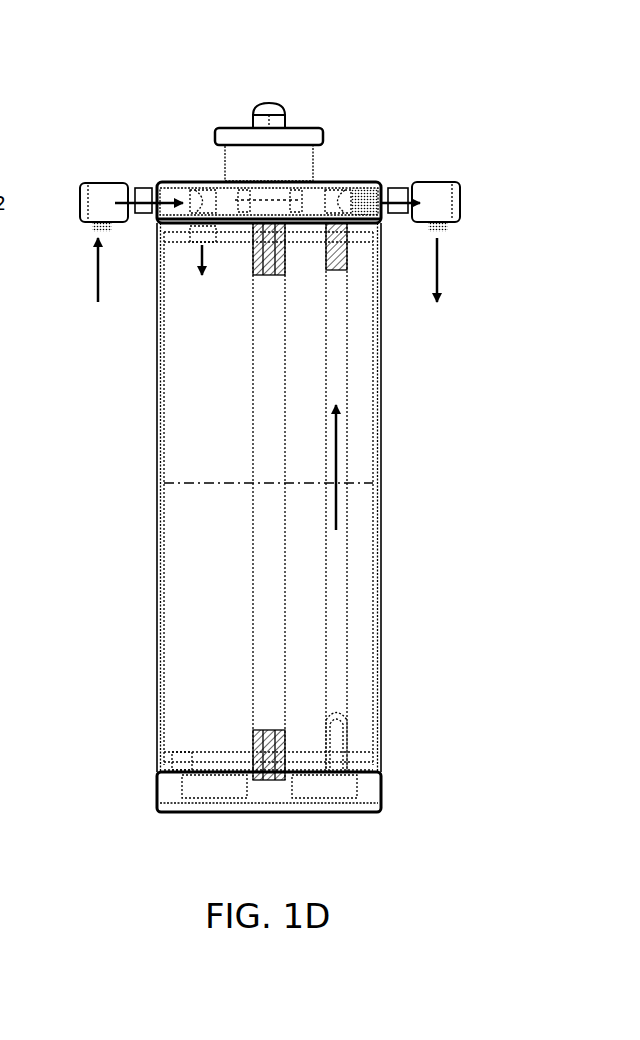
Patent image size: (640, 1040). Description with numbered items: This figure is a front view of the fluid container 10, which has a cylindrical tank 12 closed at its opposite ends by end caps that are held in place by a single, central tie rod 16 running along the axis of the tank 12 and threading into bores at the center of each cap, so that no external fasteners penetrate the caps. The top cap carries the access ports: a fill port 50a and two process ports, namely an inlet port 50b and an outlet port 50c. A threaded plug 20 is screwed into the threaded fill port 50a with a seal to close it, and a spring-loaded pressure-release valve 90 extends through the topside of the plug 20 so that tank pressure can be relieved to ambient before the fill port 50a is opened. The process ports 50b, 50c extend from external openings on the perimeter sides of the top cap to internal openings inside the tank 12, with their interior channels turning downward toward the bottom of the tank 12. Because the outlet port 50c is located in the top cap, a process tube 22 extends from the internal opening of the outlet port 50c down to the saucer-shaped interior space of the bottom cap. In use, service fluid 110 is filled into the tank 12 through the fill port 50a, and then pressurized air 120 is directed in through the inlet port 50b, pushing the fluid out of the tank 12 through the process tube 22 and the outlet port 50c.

The fluid container 10 is at (508, 86).
The cylindrical tank 12 is at (372, 575).
The tie rod 16 is at (278, 422).
The threaded plug 20 is at (297, 130).
The process tube 22 is at (340, 435).
The fill port 50a is at (267, 212).
The inlet port 50b is at (190, 195).
The outlet port 50c is at (338, 197).
The pressure-release valve 90 is at (262, 115).
The service fluid 110 is at (440, 267).
The pressurized air 120 is at (98, 275).